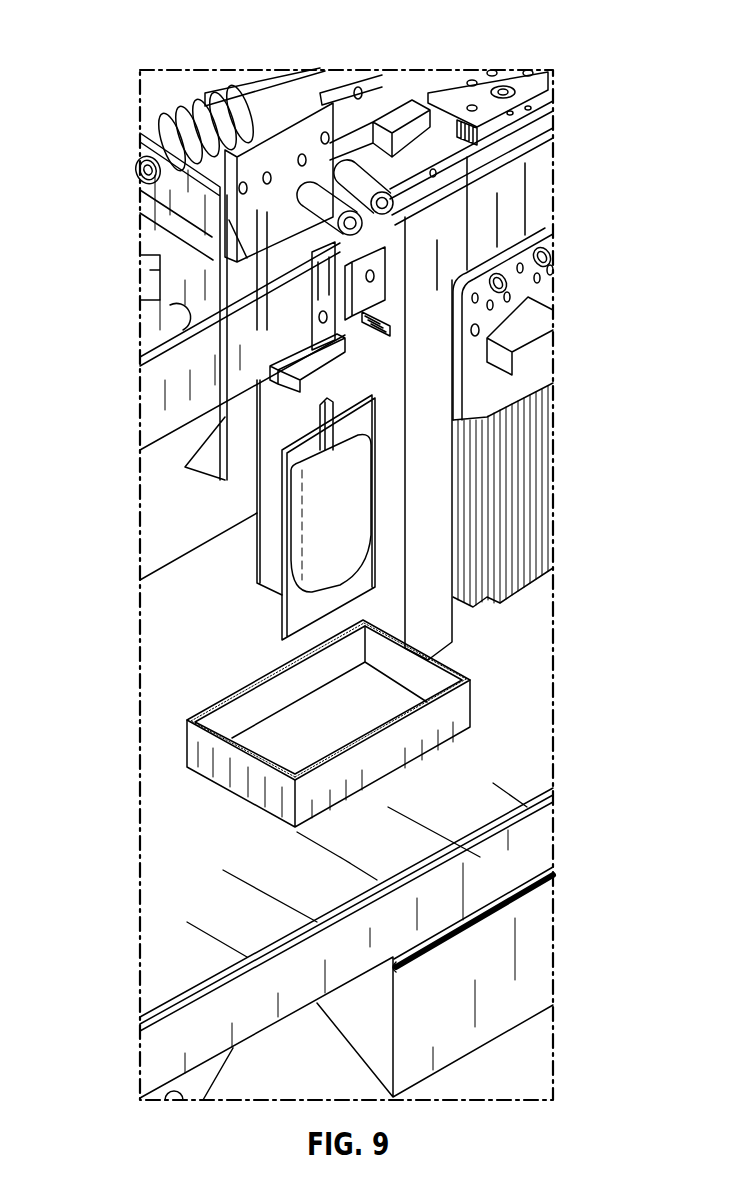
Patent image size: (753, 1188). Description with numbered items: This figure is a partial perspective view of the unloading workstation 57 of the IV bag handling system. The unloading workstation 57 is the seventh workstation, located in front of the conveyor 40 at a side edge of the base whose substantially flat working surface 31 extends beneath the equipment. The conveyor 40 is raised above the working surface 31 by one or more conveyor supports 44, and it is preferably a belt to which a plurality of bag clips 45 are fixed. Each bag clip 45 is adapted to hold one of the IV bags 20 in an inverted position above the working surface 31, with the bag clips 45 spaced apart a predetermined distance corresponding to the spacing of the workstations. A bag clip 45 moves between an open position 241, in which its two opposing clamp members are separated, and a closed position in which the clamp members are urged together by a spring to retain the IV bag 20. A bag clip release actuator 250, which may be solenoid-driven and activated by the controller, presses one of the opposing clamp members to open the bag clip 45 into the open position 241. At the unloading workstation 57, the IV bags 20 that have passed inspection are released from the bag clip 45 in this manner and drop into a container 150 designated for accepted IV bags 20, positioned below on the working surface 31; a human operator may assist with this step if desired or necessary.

The IV bag 20 is at (360, 427).
The working surface 31 is at (378, 853).
The conveyor 40 is at (167, 390).
The conveyor support 44 is at (430, 487).
The bag clip 45 is at (380, 338).
The unloading workstation 57 is at (370, 902).
The container 150 is at (440, 722).
The open position 241 is at (267, 375).
The bag clip release actuator 250 is at (380, 190).